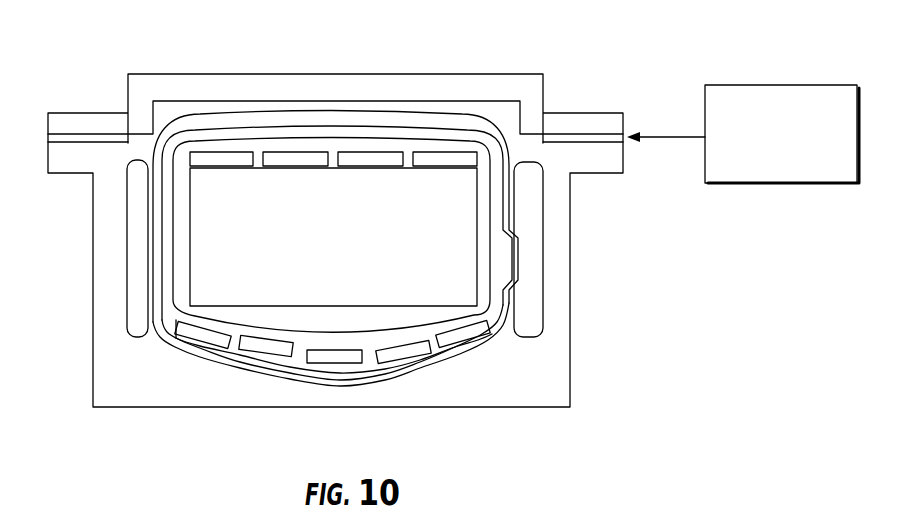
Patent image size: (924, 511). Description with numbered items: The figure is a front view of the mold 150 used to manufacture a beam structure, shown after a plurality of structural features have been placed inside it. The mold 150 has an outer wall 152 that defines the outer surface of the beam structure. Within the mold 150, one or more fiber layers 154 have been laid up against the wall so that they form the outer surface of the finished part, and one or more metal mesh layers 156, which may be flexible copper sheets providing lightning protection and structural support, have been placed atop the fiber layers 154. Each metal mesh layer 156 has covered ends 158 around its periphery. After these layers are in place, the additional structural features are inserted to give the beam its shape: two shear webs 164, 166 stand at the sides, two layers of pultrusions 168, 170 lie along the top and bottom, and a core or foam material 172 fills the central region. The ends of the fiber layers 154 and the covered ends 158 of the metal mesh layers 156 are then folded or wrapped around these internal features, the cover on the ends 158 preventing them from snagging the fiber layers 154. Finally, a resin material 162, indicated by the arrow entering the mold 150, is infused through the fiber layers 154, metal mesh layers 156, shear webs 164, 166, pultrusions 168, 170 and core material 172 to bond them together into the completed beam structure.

The mold 150 is at (577, 350).
The outer wall 152 is at (573, 284).
The fiber layer 154 is at (165, 262).
The metal mesh layer 156 is at (190, 203).
The ends of metal mesh layer 158 is at (212, 356).
The resin material 162 is at (768, 85).
The shear web 164 is at (142, 234).
The shear web 166 is at (523, 211).
The layer of pultrusions 168 is at (168, 333).
The layer of pultrusions 170 is at (215, 142).
The core material 172 is at (408, 242).